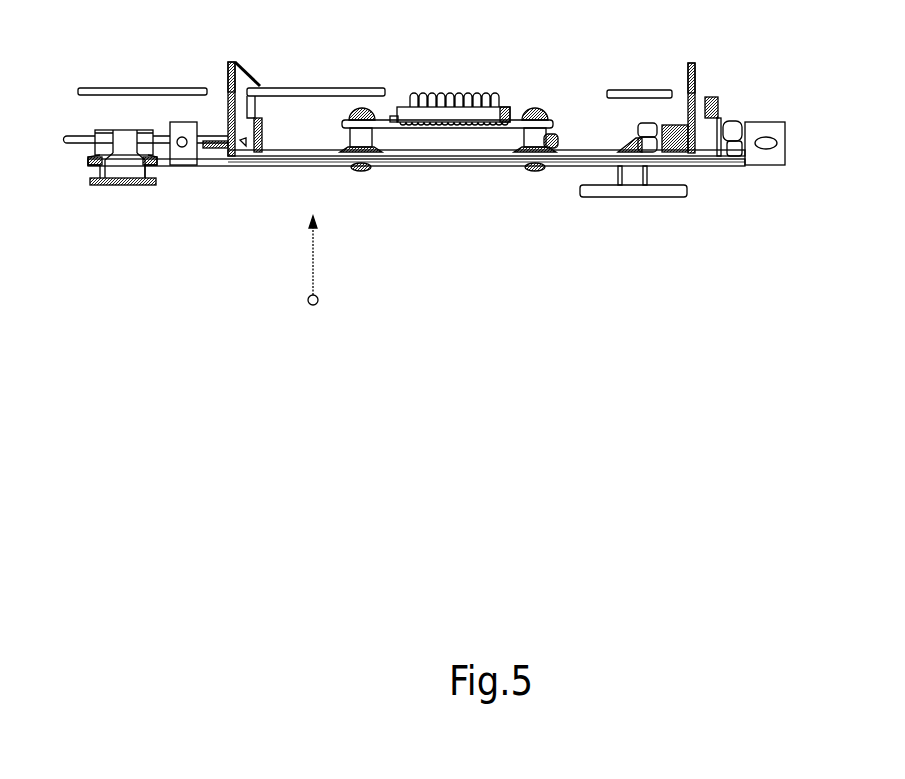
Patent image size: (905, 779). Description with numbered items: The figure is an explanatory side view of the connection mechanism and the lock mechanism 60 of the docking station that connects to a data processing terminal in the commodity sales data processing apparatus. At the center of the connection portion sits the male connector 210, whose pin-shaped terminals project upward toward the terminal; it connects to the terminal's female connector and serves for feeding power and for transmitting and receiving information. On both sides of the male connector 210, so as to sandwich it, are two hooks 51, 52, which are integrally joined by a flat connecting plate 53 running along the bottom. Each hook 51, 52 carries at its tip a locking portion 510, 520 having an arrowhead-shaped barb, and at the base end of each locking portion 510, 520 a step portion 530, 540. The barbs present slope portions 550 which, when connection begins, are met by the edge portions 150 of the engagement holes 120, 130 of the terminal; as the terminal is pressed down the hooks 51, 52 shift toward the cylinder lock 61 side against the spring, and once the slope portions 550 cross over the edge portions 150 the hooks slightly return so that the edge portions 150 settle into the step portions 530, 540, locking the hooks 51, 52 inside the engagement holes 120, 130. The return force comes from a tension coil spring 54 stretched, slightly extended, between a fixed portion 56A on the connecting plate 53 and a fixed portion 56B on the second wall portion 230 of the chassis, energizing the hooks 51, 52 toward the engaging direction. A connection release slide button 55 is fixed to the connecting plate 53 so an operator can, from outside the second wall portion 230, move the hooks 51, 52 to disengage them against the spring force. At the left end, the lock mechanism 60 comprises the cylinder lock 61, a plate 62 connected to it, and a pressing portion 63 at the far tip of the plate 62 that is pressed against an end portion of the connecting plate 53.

The hook 51 is at (228, 82).
The hook 52 is at (688, 95).
The connecting plate 53 is at (302, 166).
The tension coil spring 54 is at (670, 156).
The connection release slide button 55 is at (590, 197).
The fixed portion 56A is at (638, 136).
The fixed portion 56B is at (726, 157).
The lock mechanism 60 is at (90, 173).
The cylinder lock 61 is at (122, 186).
The plate 62 is at (219, 166).
The pressing portion 63 is at (248, 160).
The engagement hole 120 is at (212, 92).
The engagement hole 130 is at (660, 92).
The edge portion 150 is at (282, 97).
The male connector 210 is at (437, 92).
The second wall portion 230 is at (557, 162).
The locking portion 510 is at (233, 62).
The locking portion 520 is at (690, 66).
The step portion 530 is at (252, 110).
The step portion 540 is at (718, 110).
The slope portion 550 is at (248, 71).